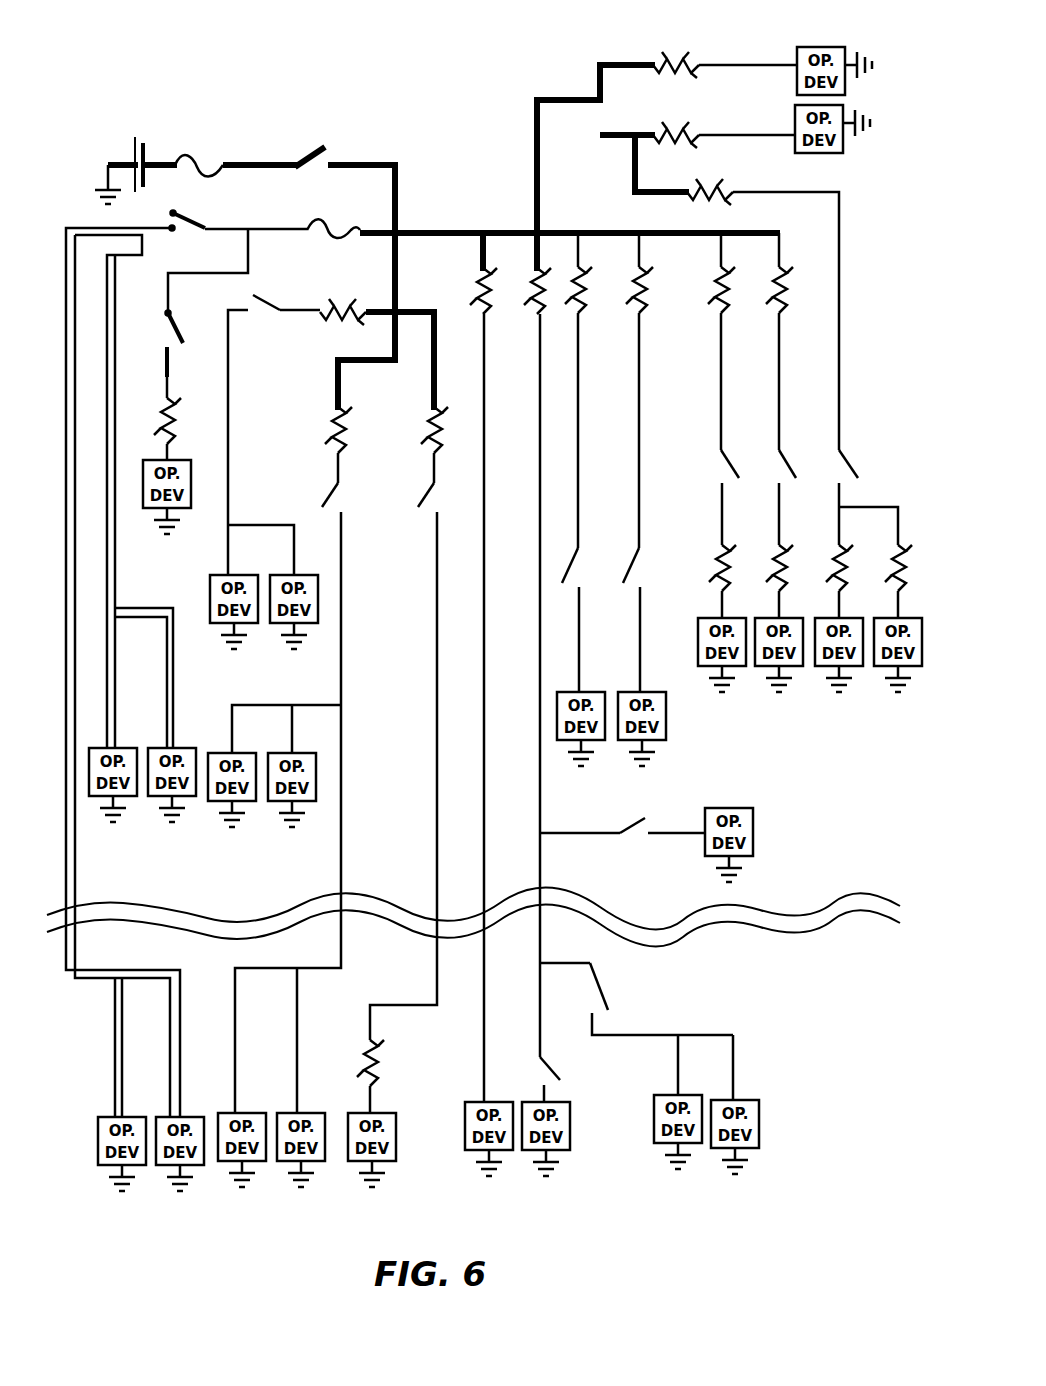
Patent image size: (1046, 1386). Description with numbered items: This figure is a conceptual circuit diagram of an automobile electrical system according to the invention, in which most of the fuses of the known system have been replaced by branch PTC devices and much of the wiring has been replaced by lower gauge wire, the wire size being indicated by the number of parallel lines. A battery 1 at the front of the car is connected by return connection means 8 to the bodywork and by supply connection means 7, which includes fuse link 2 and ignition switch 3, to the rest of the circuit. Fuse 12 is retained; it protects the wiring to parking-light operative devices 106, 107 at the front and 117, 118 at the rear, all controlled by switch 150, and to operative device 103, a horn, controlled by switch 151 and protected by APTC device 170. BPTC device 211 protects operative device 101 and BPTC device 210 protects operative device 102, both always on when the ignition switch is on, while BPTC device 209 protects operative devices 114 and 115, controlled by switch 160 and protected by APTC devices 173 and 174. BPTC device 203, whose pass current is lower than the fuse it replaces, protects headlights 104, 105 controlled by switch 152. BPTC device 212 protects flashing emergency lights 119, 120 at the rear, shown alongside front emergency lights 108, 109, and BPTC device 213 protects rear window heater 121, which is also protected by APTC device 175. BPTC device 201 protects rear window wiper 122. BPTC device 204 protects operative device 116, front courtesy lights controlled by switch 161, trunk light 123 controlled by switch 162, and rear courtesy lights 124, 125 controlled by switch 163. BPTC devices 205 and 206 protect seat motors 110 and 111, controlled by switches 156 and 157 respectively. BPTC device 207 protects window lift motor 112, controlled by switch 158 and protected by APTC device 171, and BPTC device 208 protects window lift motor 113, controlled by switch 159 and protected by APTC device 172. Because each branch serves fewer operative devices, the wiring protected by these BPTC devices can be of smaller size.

The battery 1 is at (154, 134).
The fuse link 2 is at (212, 138).
The ignition switch 3 is at (325, 134).
The supply connection means 7 is at (263, 164).
The return connection means 8 is at (105, 163).
The fuse 12 is at (286, 222).
The operative device 101 is at (812, 48).
The operative device 102 is at (833, 153).
The operative device 103 is at (191, 477).
The operative device 104 is at (210, 598).
The operative device 105 is at (260, 640).
The operative device 106 is at (138, 746).
The operative device 107 is at (195, 747).
The operative device 108 is at (273, 752).
The operative device 109 is at (316, 757).
The operative device 110 is at (557, 717).
The operative device 111 is at (615, 697).
The operative device 112 is at (705, 620).
The operative device 113 is at (760, 675).
The operative device 114 is at (830, 678).
The operative device 115 is at (888, 678).
The operative device 116 is at (753, 825).
The operative device 117 is at (105, 1130).
The operative device 118 is at (160, 1113).
The operative device 119 is at (214, 1168).
The operative device 120 is at (278, 1170).
The operative device 121 is at (400, 1123).
The operative device 122 is at (467, 1143).
The operative device 123 is at (570, 1154).
The operative device 124 is at (685, 1097).
The operative device 125 is at (762, 1127).
The switch 150 is at (178, 226).
The switch 151 is at (176, 322).
The switch 152 is at (252, 300).
The switch 156 is at (565, 571).
The switch 157 is at (603, 551).
The switch 158 is at (735, 463).
The switch 159 is at (794, 448).
The switch 160 is at (853, 462).
The switch 161 is at (645, 833).
The switch 162 is at (550, 1068).
The switch 163 is at (600, 1005).
The APTC device 170 is at (172, 364).
The APTC device 171 is at (718, 545).
The APTC device 172 is at (780, 546).
The APTC device 173 is at (835, 540).
The APTC device 174 is at (905, 545).
The APTC device 175 is at (386, 1050).
The BPTC device 201 is at (483, 260).
The BPTC device 203 is at (346, 307).
The BPTC device 204 is at (537, 312).
The BPTC device 205 is at (586, 311).
The BPTC device 206 is at (645, 311).
The BPTC device 207 is at (714, 313).
The BPTC device 208 is at (789, 299).
The BPTC device 209 is at (741, 198).
The BPTC device 210 is at (703, 140).
The BPTC device 211 is at (670, 75).
The BPTC device 212 is at (322, 412).
The BPTC device 213 is at (422, 407).